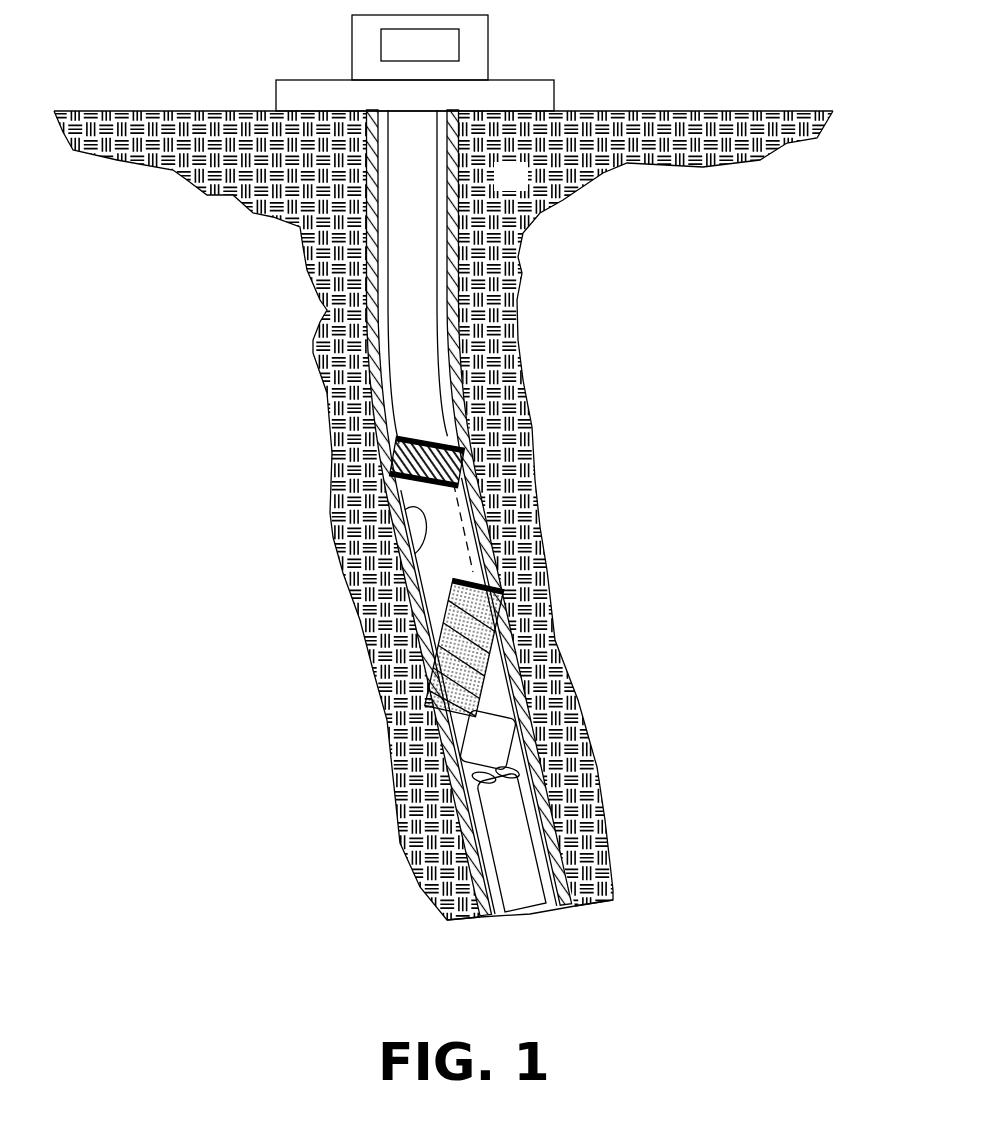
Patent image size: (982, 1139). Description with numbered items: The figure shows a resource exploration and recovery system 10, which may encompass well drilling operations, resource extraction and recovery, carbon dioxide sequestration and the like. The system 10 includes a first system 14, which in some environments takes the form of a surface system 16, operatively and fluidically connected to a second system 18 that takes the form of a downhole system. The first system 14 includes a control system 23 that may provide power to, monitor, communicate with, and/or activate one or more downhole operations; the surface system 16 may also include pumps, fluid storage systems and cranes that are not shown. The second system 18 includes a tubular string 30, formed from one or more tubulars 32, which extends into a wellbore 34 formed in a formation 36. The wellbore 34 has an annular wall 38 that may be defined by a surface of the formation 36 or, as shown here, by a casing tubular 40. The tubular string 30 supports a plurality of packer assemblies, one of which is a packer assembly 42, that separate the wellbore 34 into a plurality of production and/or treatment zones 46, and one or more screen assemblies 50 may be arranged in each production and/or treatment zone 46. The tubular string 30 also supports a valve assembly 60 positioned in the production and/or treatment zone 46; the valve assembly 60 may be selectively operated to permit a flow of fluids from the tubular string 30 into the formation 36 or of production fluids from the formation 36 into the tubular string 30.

The resource exploration and recovery system 10 is at (665, 78).
The first system 14 is at (310, 31).
The surface system 16 is at (503, 45).
The control system 23 is at (393, 48).
The second system 18 is at (152, 280).
The formation 36 is at (526, 189).
The tubular string 30 is at (356, 333).
The tubular 32 is at (428, 293).
The wellbore 34 is at (470, 787).
The annular wall 38 is at (398, 549).
The casing tubular 40 is at (487, 550).
The packer assembly 42 is at (378, 469).
The production and/or treatment zone 46 is at (580, 732).
The screen assembly 50 is at (512, 660).
The valve assembly 60 is at (470, 504).